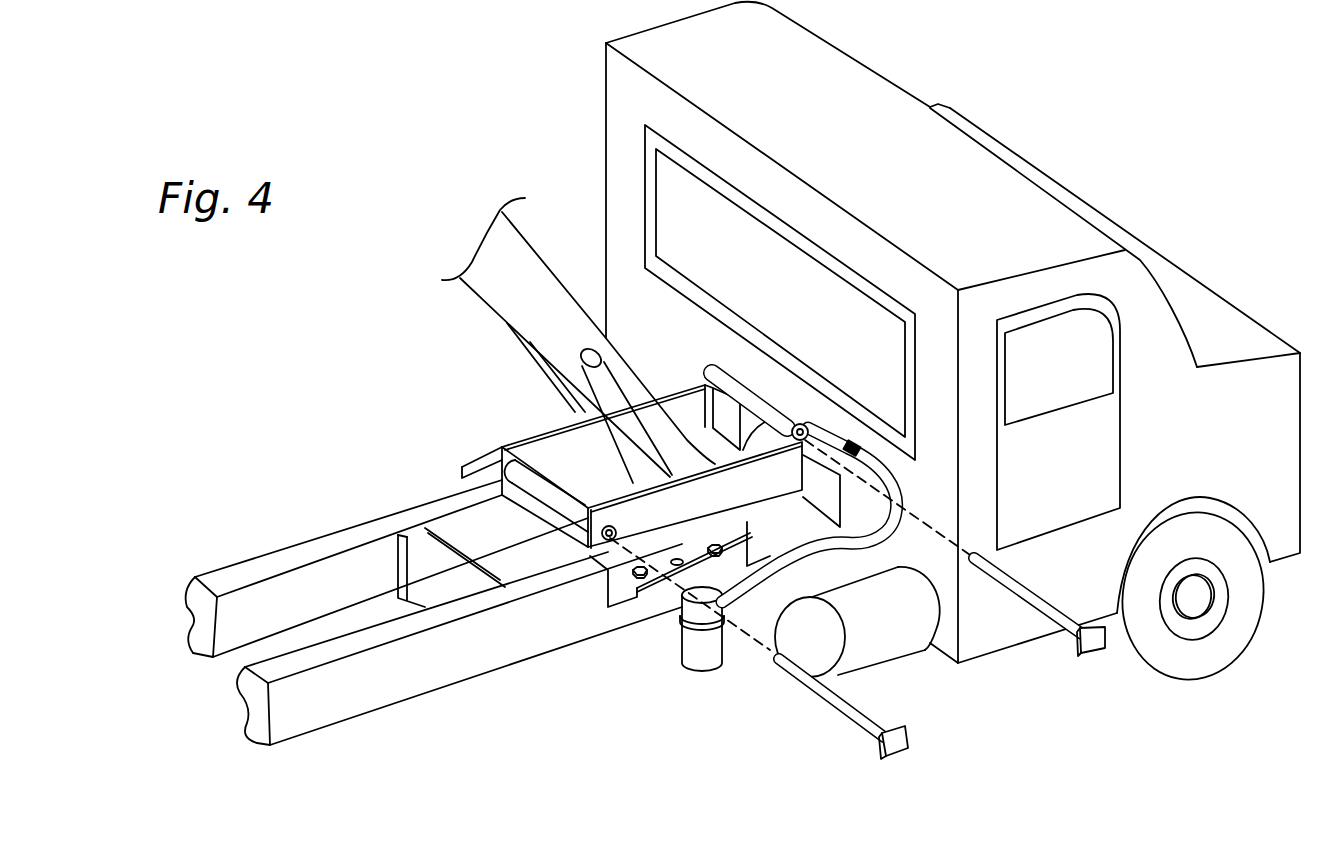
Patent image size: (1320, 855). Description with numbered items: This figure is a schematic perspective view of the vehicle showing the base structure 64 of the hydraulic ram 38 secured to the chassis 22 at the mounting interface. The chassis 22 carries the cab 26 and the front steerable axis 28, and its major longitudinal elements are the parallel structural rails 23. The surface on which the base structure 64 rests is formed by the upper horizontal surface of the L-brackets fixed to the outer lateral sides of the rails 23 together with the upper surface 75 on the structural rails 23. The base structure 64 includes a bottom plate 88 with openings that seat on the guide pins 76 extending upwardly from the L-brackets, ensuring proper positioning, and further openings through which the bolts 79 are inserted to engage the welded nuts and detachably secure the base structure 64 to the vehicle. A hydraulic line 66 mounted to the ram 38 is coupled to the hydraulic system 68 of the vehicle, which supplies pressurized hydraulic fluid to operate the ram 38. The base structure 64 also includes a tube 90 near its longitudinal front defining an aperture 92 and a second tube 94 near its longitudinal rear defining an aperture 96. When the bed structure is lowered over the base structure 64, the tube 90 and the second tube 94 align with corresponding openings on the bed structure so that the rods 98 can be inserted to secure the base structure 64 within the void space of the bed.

The chassis 22 is at (242, 562).
The structural rails 23 is at (323, 540).
The cab 26 is at (1167, 317).
The front steerable axis 28 is at (1203, 597).
The hydraulic ram 38 is at (532, 263).
The base structure 64 is at (460, 368).
The hydraulic line 66 is at (590, 440).
The hydraulic system 68 is at (898, 481).
The upper surface 75 is at (385, 528).
The guide pins 76 is at (678, 557).
The bolts 79 is at (718, 548).
The bottom plate 88 is at (473, 465).
The tube 90 is at (745, 393).
The aperture 92 is at (807, 427).
The second tube 94 is at (548, 493).
The aperture 96 is at (609, 533).
The rods 98 is at (853, 712).